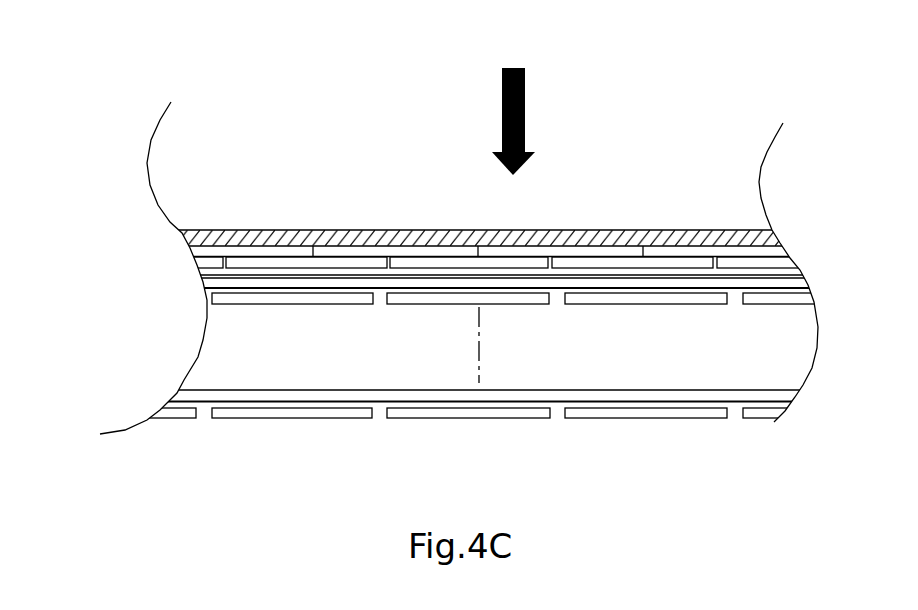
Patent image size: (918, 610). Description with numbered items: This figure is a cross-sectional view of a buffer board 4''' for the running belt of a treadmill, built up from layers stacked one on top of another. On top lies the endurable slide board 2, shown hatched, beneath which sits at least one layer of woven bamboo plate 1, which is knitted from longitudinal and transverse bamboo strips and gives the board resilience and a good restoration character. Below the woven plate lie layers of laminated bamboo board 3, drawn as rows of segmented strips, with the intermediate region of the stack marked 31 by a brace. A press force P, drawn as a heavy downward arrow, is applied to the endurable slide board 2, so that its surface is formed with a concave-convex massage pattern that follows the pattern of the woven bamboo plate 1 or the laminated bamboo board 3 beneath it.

The woven bamboo plate 1 is at (263, 264).
The endurable slide board 2 is at (462, 232).
The laminated bamboo board 3 is at (264, 299).
The carrier / intermediate layer 31 is at (466, 346).
The buffer board 4''' is at (459, 263).
The press force P is at (513, 103).